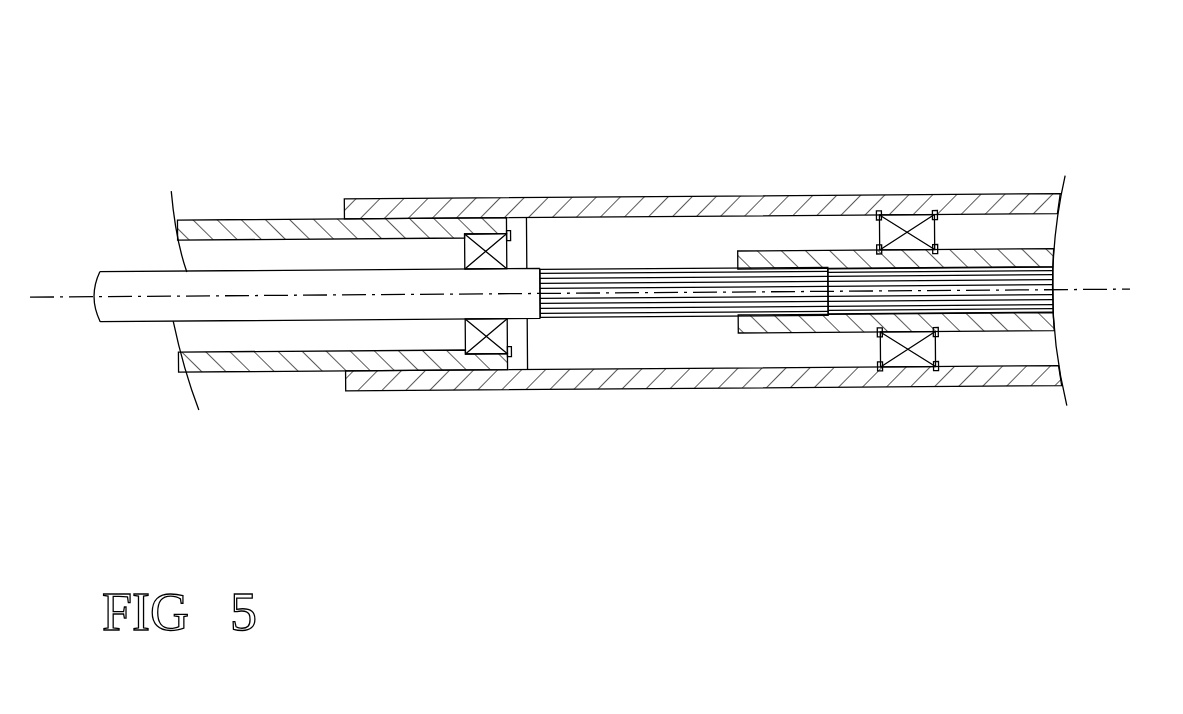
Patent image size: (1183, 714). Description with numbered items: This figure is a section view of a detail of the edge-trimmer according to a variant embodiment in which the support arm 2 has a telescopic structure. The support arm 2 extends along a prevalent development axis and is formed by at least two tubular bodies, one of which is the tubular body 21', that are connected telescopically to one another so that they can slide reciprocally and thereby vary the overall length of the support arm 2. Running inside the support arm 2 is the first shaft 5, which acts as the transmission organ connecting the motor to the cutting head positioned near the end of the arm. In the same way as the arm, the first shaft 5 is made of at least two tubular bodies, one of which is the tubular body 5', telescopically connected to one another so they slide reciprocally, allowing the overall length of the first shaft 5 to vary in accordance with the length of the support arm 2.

The support arm 2 is at (626, 165).
The tubular body 21' is at (896, 184).
The first shaft 5 is at (684, 405).
The tubular body 5' is at (994, 255).